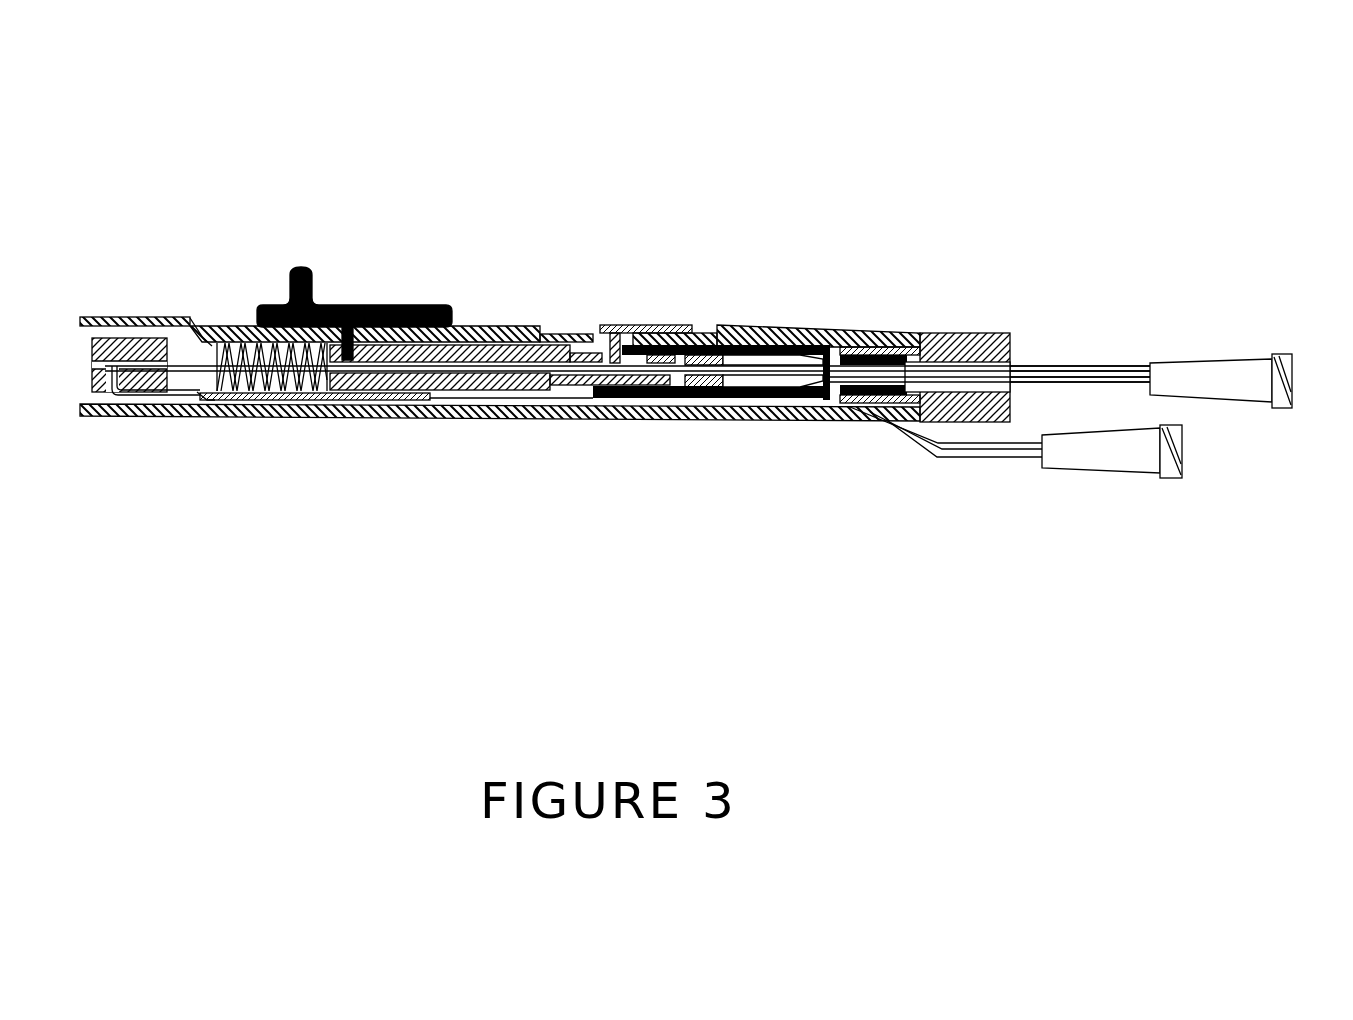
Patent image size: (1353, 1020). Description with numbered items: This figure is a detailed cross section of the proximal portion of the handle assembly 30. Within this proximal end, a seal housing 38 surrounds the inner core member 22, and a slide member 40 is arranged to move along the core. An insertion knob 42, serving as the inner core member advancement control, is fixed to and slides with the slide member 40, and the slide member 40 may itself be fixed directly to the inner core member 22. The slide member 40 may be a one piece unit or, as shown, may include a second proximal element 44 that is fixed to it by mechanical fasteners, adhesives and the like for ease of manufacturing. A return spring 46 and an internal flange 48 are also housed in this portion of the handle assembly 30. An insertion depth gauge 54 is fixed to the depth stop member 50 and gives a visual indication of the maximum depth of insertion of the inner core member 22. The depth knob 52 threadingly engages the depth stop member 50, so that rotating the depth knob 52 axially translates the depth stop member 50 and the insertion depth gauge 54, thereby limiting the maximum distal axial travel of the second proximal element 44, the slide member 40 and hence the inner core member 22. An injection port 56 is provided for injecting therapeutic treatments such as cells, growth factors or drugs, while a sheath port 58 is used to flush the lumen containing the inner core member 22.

The inner core member 22 is at (198, 327).
The handle assembly 30 is at (130, 413).
The seal housing 38 is at (128, 337).
The slide member 40 is at (522, 380).
The insertion knob 42 is at (335, 305).
The second proximal element 44 is at (690, 378).
The return spring 46 is at (277, 398).
The internal flange 48 is at (198, 393).
The depth stop member 50 is at (763, 387).
The depth knob 52 is at (962, 333).
The insertion depth gauge 54 is at (610, 327).
The injection port 56 is at (1210, 360).
The sheath port 58 is at (1080, 470).